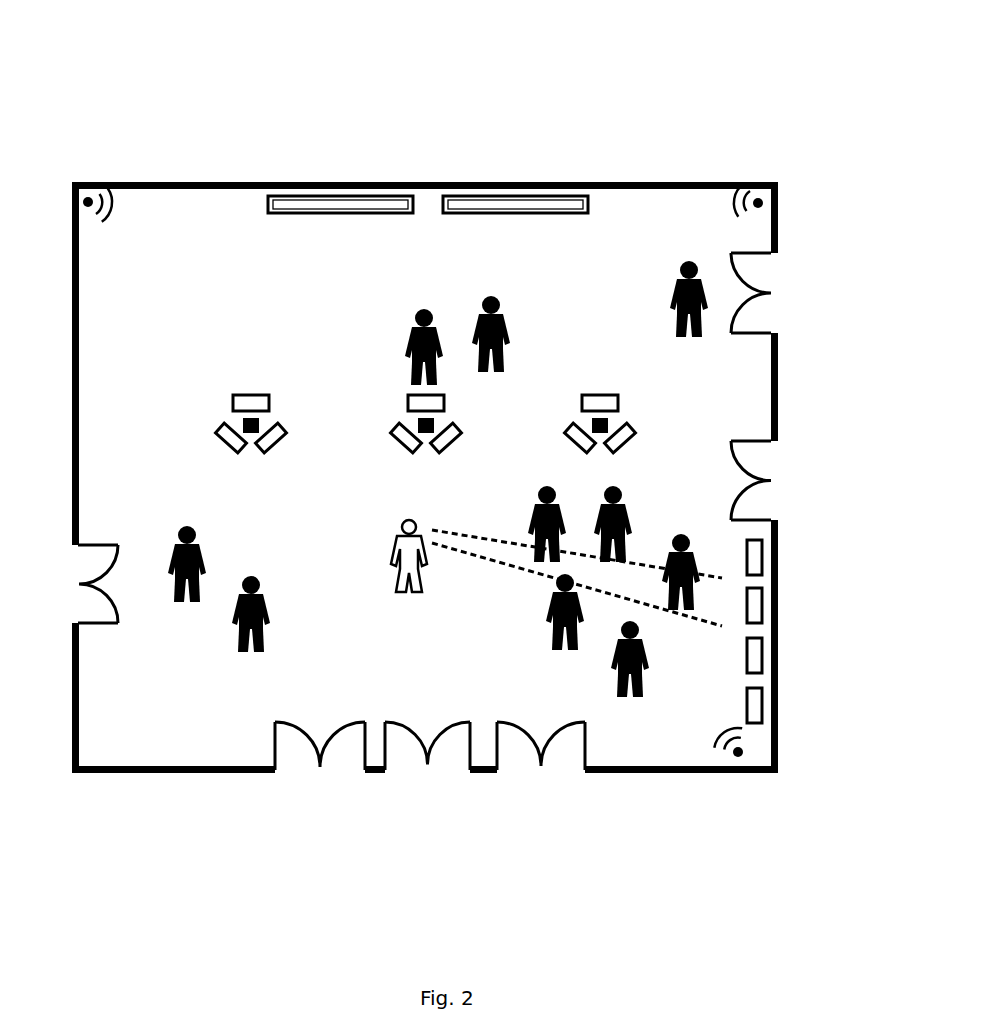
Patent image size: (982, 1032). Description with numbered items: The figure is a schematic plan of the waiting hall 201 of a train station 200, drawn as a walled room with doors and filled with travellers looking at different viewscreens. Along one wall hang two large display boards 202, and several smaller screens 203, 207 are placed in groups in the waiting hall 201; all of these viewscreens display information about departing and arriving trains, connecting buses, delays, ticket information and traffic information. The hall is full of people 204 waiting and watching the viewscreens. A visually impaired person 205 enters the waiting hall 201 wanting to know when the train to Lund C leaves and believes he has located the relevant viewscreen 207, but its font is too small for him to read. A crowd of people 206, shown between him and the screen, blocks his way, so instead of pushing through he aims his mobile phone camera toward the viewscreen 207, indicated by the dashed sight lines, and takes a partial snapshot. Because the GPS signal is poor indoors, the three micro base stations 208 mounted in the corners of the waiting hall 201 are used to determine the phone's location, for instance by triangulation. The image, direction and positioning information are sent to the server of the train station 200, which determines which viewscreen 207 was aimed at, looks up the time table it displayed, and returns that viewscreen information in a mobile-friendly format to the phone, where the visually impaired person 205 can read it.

The train station 200 is at (406, 56).
The waiting hall 201 is at (170, 183).
The large display boards 202 is at (342, 207).
The smaller screens 203 is at (228, 425).
The people 204 is at (410, 348).
The visually impaired person 205 is at (394, 556).
The crowd of people 206 is at (508, 620).
The viewscreen 207 is at (756, 606).
The micro base stations 208 is at (740, 757).